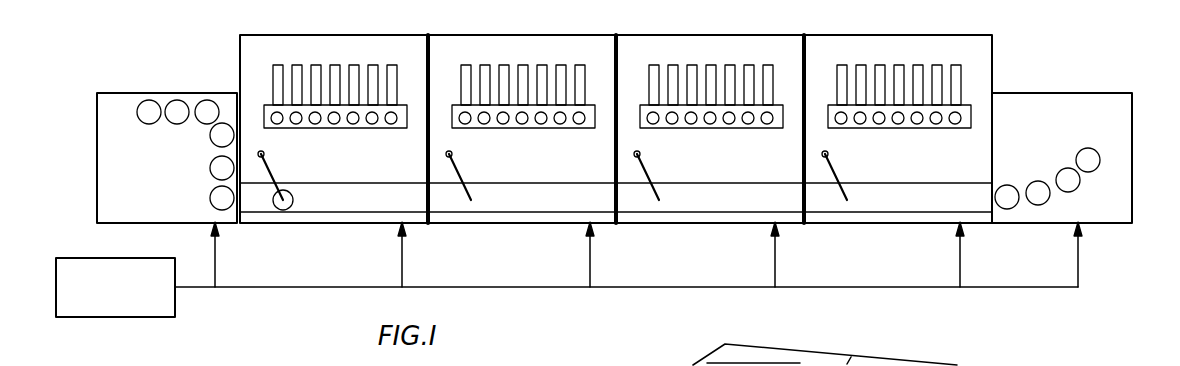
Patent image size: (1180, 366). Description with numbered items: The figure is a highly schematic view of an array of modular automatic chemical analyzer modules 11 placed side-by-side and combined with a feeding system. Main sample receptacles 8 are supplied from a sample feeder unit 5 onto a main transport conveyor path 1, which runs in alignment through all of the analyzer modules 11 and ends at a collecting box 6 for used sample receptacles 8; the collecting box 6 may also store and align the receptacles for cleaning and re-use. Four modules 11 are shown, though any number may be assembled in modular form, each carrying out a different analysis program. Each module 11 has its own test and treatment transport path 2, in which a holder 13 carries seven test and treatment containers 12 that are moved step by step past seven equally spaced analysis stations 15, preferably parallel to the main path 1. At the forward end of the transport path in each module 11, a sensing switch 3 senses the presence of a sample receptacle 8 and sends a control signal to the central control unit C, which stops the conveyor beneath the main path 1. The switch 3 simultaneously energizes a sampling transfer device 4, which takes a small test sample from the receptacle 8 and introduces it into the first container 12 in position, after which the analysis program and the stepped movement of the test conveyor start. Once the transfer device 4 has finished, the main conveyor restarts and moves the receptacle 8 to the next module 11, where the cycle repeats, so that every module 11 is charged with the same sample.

The main transport conveyor path 1 is at (375, 205).
The test and treatment transport path 2 is at (395, 128).
The sensing switch 3 is at (283, 210).
The sampling transfer device 4 is at (264, 153).
The sample feeder unit 5 is at (156, 175).
The collecting box 6 is at (1060, 150).
The main sample receptacle 8 is at (211, 192).
The analyzer module 11 is at (392, 35).
The test and treatment container 12 is at (314, 124).
The holder 13 is at (363, 128).
The analysis station 15 is at (392, 65).
The central control unit C is at (85, 258).